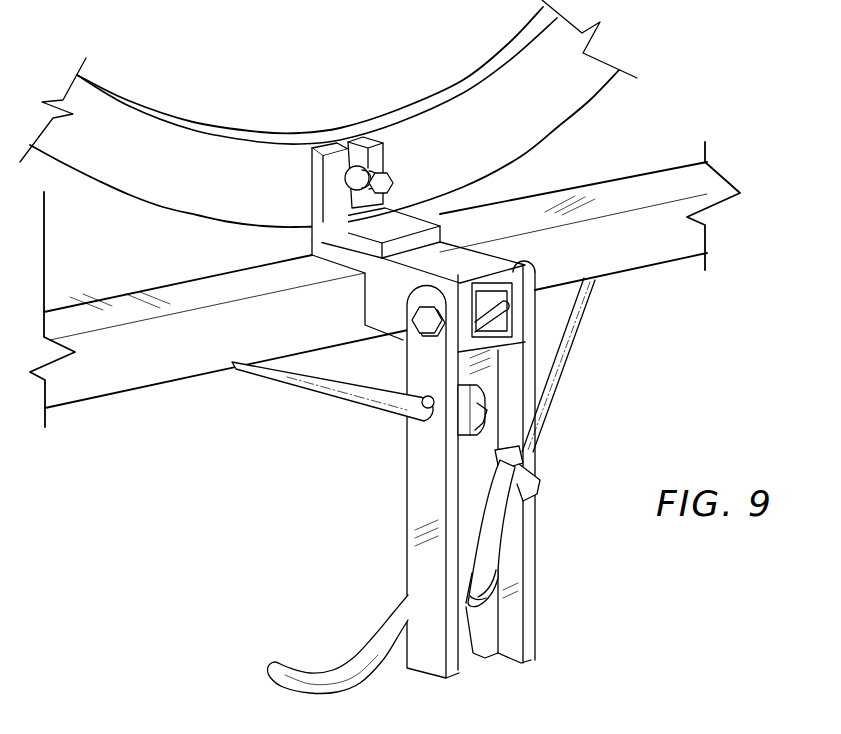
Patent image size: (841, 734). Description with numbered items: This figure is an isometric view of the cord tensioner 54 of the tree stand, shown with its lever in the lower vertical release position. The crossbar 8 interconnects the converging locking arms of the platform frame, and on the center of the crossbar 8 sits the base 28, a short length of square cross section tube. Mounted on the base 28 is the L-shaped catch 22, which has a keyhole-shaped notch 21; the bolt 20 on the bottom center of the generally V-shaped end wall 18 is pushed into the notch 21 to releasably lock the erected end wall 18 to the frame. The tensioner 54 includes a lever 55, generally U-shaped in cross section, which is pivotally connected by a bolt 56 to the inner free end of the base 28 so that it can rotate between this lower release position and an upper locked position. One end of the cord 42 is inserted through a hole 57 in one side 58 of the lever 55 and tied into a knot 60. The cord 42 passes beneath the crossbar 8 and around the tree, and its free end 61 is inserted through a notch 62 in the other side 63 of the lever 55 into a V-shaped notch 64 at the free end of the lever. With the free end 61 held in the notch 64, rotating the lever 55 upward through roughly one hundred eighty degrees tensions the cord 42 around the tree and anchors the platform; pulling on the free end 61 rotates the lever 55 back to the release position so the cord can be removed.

The crossbar 8 is at (97, 389).
The end wall 18 is at (584, 88).
The bolt 20 is at (390, 183).
The keyhole-shaped notch 21 is at (358, 148).
The catch 22 is at (313, 194).
The base 28 is at (305, 252).
The cord 42 is at (288, 381).
The tensioner 54 is at (683, 393).
The lever 55 is at (410, 513).
The bolt 56 is at (545, 340).
The hole 57 is at (406, 431).
The side 58 is at (425, 558).
The knot 60 is at (462, 422).
The free end 61 is at (268, 671).
The notch 62 is at (516, 458).
The side 63 is at (517, 566).
The V-shaped notch 64 is at (482, 640).